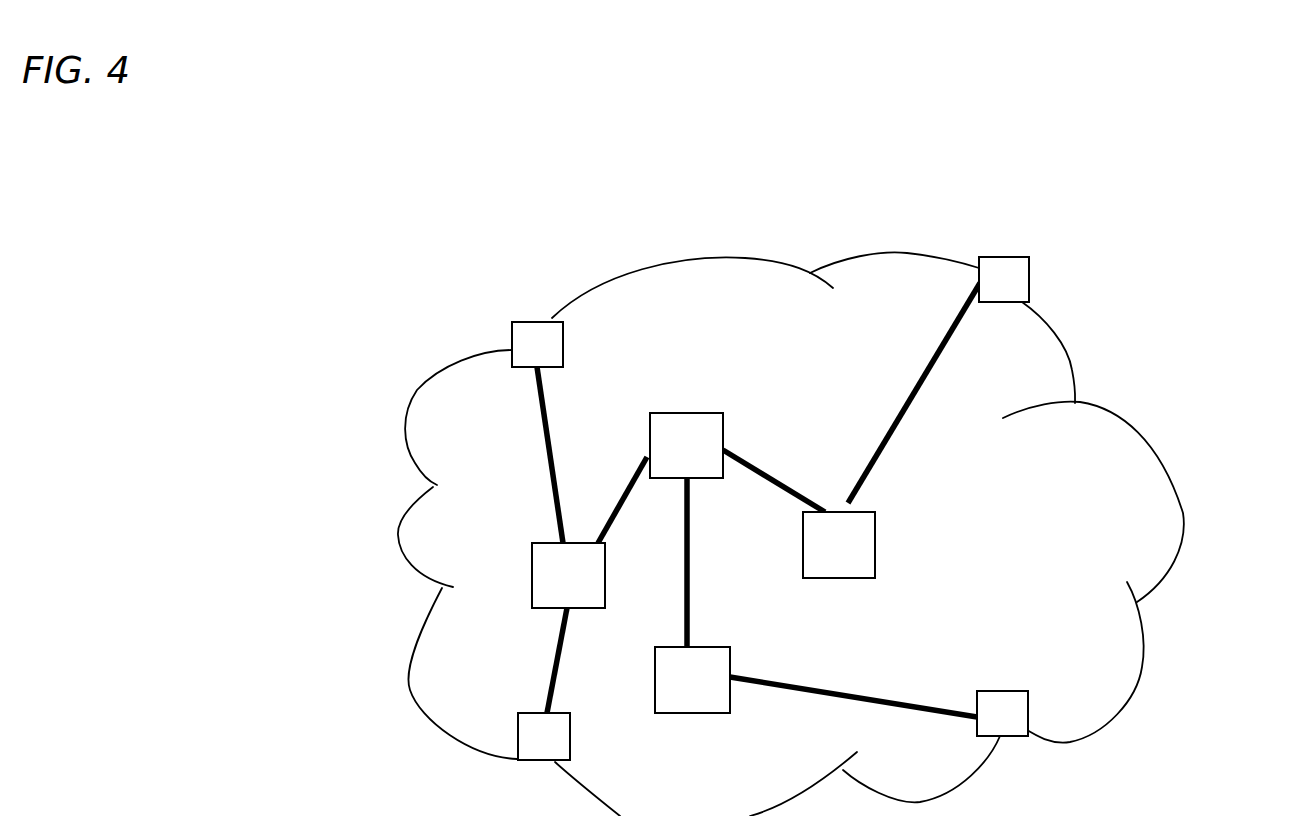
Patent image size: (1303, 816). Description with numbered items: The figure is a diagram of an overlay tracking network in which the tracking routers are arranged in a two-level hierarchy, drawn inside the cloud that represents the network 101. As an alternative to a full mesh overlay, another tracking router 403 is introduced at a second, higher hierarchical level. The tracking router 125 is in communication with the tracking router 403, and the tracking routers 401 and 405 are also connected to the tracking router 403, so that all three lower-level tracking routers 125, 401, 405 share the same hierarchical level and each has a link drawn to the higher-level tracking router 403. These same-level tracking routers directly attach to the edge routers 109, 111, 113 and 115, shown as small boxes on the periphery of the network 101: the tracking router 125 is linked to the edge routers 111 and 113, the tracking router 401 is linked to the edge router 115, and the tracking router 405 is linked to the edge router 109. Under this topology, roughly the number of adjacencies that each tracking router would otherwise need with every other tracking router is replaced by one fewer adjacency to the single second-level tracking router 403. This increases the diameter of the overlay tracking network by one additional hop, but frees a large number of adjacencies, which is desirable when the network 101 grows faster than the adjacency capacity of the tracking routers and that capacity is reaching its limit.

The network 101 is at (1185, 512).
The edge router 109 is at (1028, 710).
The edge router 111 is at (518, 740).
The edge router 113 is at (563, 345).
The edge router 115 is at (1028, 277).
The tracking router 125 is at (532, 577).
The tracking router 401 is at (875, 543).
The tracking router 403 is at (725, 418).
The tracking router 405 is at (693, 713).